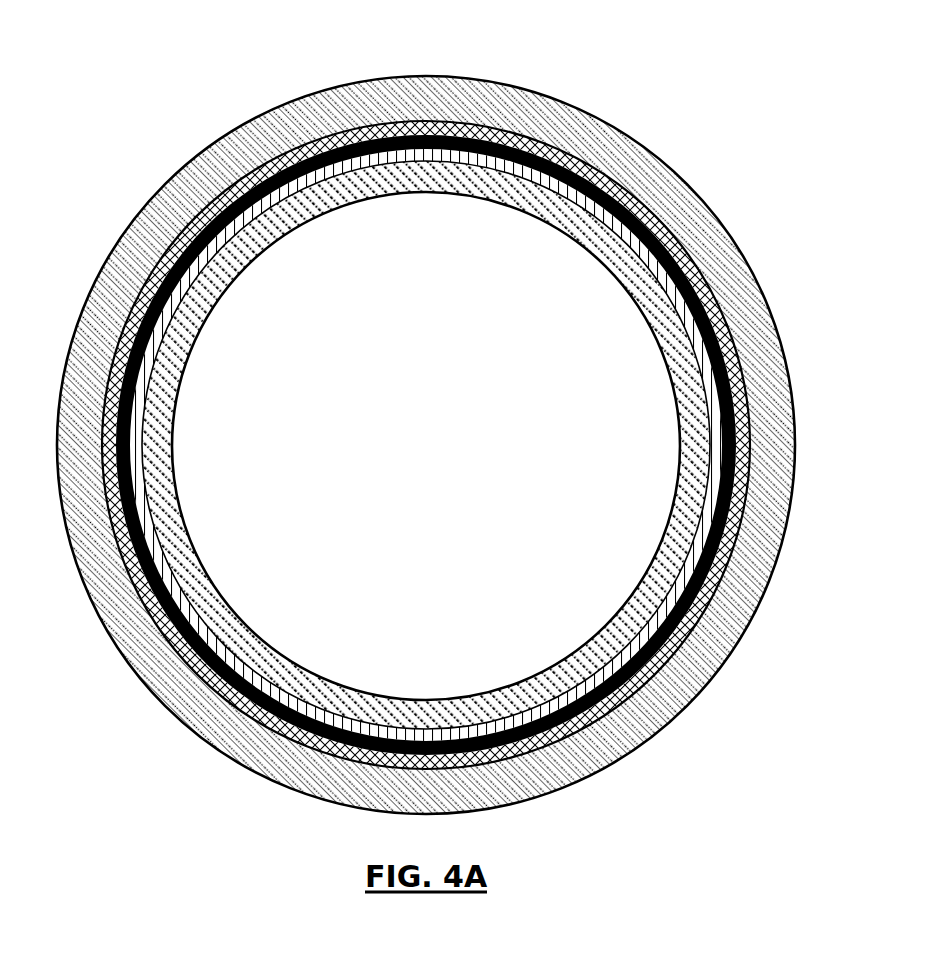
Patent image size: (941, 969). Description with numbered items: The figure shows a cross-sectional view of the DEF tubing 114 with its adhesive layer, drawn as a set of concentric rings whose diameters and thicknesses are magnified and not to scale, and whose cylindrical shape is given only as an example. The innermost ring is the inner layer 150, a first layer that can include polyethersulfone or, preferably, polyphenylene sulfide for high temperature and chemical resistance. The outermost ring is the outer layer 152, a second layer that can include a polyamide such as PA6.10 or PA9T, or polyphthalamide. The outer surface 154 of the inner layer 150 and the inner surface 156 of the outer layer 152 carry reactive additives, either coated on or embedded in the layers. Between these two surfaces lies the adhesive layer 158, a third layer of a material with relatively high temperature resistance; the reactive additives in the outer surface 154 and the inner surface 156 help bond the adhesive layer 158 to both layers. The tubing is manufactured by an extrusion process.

The DEF tubing 114 is at (778, 94).
The inner layer 150 is at (635, 270).
The outer layer 152 is at (778, 375).
The outer surface of the inner layer 154 is at (583, 195).
The inner surface of the outer layer 156 is at (495, 128).
The adhesive layer 158 is at (715, 318).